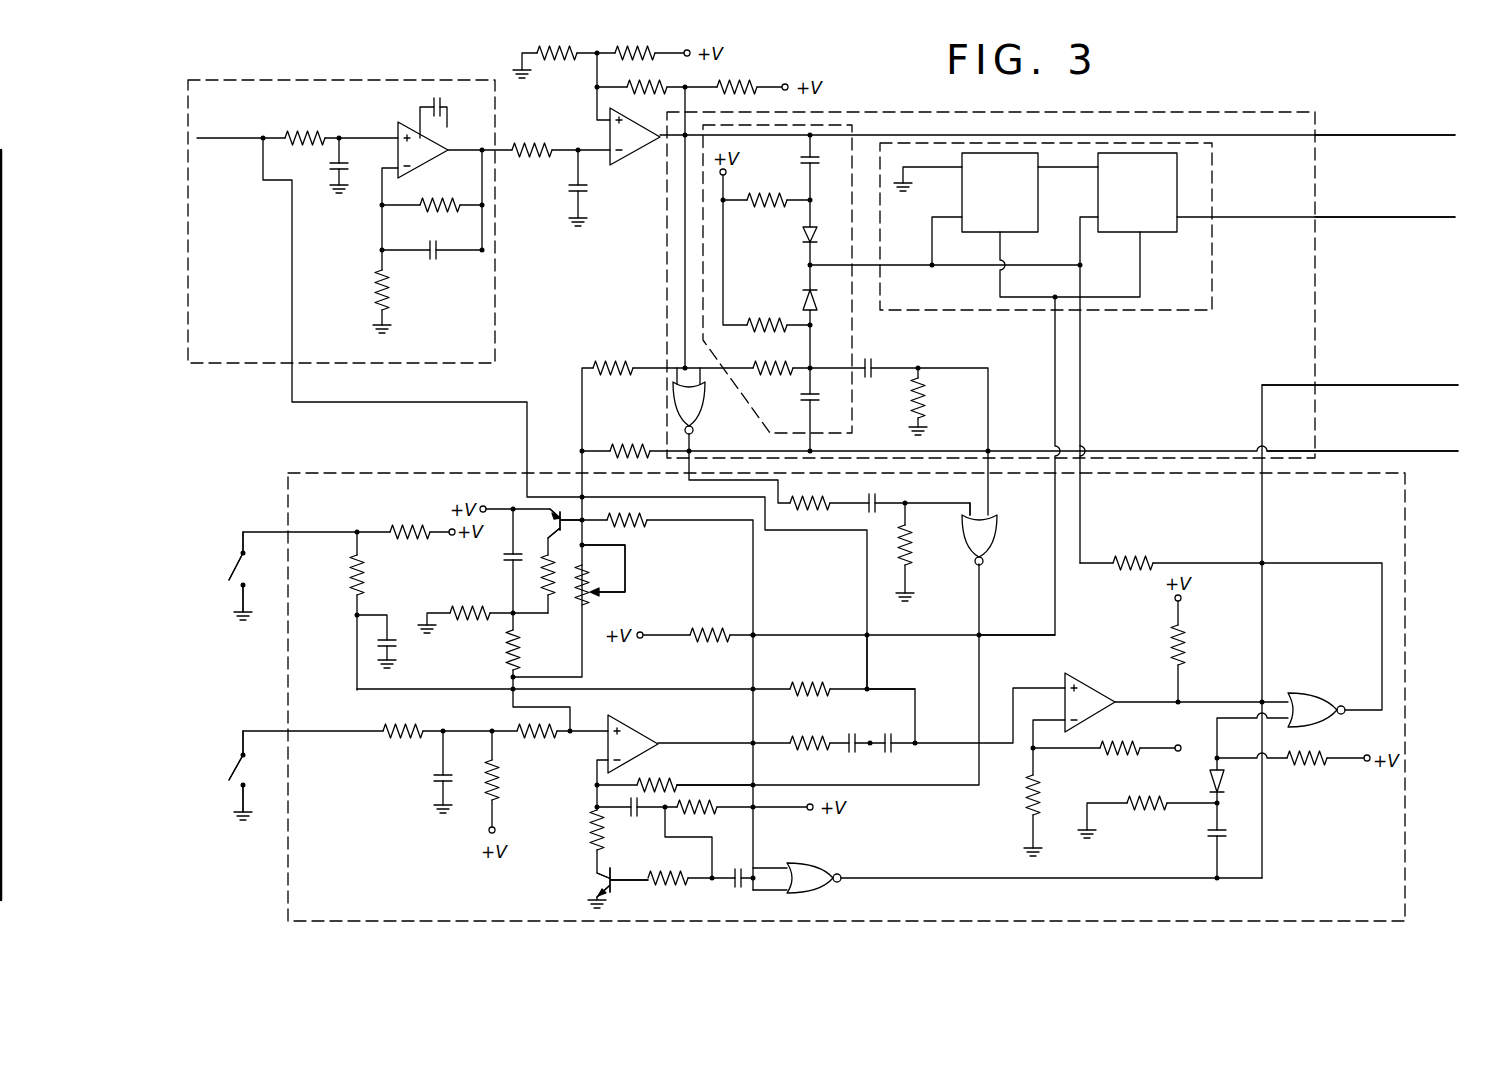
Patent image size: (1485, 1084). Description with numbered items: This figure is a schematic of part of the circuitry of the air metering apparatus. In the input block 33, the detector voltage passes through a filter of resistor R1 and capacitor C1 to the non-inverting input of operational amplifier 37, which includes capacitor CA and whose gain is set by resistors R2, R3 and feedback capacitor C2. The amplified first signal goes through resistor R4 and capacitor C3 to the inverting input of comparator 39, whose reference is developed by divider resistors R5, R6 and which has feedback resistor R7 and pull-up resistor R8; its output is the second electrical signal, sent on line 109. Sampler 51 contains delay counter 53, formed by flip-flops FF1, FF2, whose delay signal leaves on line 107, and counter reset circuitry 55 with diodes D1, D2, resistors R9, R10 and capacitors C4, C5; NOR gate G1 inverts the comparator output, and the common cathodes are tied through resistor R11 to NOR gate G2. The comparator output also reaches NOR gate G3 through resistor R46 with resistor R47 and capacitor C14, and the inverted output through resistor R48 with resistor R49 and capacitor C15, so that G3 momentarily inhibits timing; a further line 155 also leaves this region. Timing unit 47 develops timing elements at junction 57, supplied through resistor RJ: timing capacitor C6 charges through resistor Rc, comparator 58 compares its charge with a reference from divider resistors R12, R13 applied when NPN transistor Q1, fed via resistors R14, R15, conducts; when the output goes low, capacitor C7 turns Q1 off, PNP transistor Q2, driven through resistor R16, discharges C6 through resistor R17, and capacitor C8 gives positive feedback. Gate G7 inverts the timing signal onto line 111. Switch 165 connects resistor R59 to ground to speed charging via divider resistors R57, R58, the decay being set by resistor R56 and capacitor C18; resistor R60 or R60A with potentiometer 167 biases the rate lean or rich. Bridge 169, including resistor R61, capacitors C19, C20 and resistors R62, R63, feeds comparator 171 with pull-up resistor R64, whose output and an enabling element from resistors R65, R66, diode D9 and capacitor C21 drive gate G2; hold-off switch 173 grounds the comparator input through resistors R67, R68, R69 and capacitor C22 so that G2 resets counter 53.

The input filter/amplifier stage (dashed block) 33 is at (495, 330).
The resistor R1 is at (300, 134).
The capacitor C1 is at (334, 175).
The amplifier 37 is at (425, 165).
The capacitor CA is at (428, 105).
The resistor R3 is at (440, 212).
The feedback capacitor C2 is at (437, 258).
The resistor R2 is at (372, 298).
The resistor R4 is at (520, 145).
The capacitor C3 is at (570, 195).
The resistor R5 is at (652, 48).
The resistor R6 is at (555, 60).
The feedback resistor R7 is at (632, 90).
The pull-up resistor R8 is at (745, 82).
The comparator 39 is at (630, 160).
The sampler 51 is at (1225, 112).
The counter reset circuitry 55 is at (852, 395).
The delay counter 53 is at (1212, 270).
The capacitor C4 is at (803, 157).
The resistor R9 is at (782, 193).
The diode D1 is at (803, 236).
The diode D2 is at (805, 295).
The resistor R10 is at (782, 318).
The flip-flop FF1 is at (1000, 192).
The flip-flop FF2 is at (1137, 192).
The line 109 is at (1292, 138).
The line 107 is at (1295, 214).
The line 111 is at (1285, 383).
The line 155 is at (1205, 448).
The resistor R60 is at (635, 358).
The resistor R60A is at (645, 440).
The NOR gate G1 is at (700, 410).
The current limiting resistor R46 is at (765, 360).
The capacitor C5 is at (803, 397).
The capacitor C14 is at (866, 362).
The resistor R47 is at (928, 398).
The resistor R48 is at (800, 492).
The capacitor C15 is at (877, 495).
The NOR gate G3 is at (994, 533).
The resistor R49 is at (915, 560).
The resistor R11 is at (1125, 555).
The timing unit 47 is at (435, 470).
The hold off switch 173 is at (236, 558).
The resistor R69 is at (430, 515).
The resistor R68 is at (365, 580).
The PNP transistor Q2 is at (556, 526).
The timing capacitor C6 is at (506, 568).
The resistor Rc is at (462, 608).
The resistor R58 is at (503, 655).
The resistor R17 is at (548, 605).
The potentiometer 167 is at (595, 600).
The resistor RJ is at (732, 625).
The junction point 57 is at (756, 632).
The capacitor C22 is at (393, 650).
The resistor R16 is at (630, 528).
The resistor R67 is at (835, 680).
The bridge network 169 is at (900, 687).
The switch 165 is at (236, 765).
The resistor R59 is at (408, 742).
The capacitor C18 is at (435, 790).
The resistor R56 is at (498, 782).
The resistor R57 is at (557, 740).
The comparator 58 is at (636, 726).
The resistor R12 is at (665, 778).
The resistor R61 is at (830, 736).
The capacitor C19 is at (848, 760).
The capacitor C20 is at (890, 760).
The capacitor C8 is at (630, 814).
The resistor R14 is at (698, 815).
The resistor R13 is at (590, 842).
The NPN transistor Q1 is at (613, 880).
The resistor R15 is at (658, 890).
The capacitor C7 is at (738, 892).
The NOR gate G7 is at (818, 865).
The comparator 171 is at (1085, 688).
The resistor R62 is at (1140, 760).
The resistor R63 is at (1025, 815).
The pull-up resistor R64 is at (1188, 648).
The NOR gate G2 is at (1312, 695).
The resistor R65 is at (1300, 775).
The diode D9 is at (1224, 785).
The resistor R66 is at (1128, 815).
The capacitor C21 is at (1210, 845).